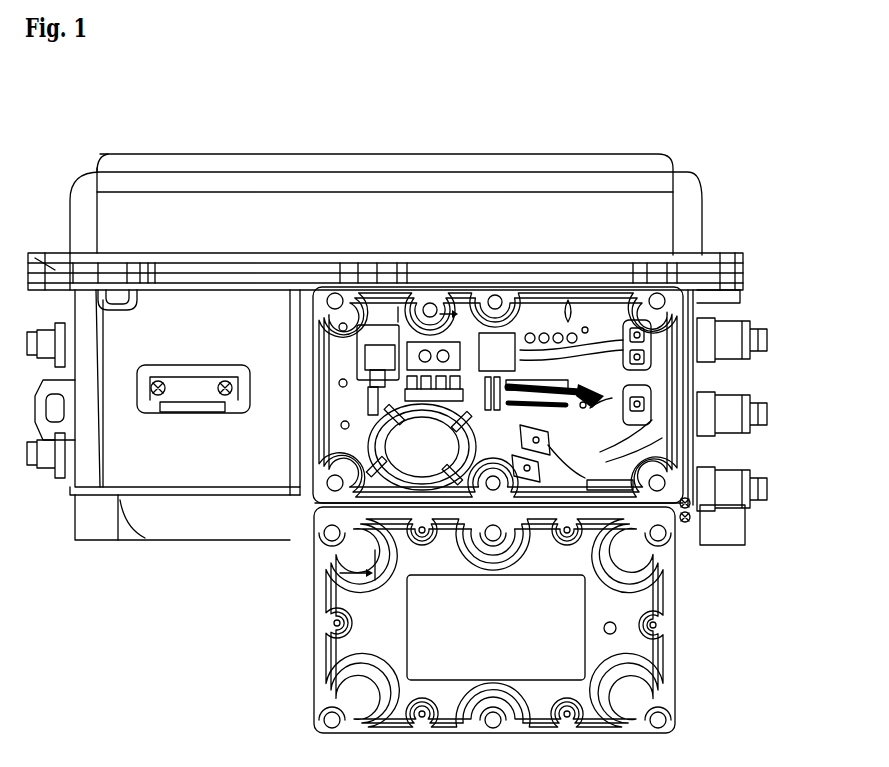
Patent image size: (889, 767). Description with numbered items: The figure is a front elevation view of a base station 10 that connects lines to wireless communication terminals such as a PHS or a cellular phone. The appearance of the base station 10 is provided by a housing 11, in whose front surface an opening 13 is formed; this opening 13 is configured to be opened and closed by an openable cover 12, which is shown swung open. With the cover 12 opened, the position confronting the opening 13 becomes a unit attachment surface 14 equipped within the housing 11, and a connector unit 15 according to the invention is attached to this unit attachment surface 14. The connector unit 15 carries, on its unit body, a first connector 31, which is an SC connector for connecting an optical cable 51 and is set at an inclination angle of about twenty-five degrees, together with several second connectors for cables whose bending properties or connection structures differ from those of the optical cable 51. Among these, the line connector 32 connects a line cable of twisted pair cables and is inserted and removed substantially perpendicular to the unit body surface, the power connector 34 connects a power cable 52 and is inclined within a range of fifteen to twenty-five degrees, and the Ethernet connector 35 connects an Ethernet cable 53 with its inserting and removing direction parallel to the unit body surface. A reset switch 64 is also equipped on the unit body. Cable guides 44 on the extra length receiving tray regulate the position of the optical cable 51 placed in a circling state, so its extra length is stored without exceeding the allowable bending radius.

The base station 10 is at (435, 443).
The housing 11 is at (712, 198).
The openable cover 12 is at (682, 667).
The opening 13 is at (572, 318).
The unit attachment surface 14 is at (608, 452).
The connector unit 15 is at (457, 347).
The first connector 31 is at (363, 357).
The line connector 32 is at (475, 380).
The power connector 34 is at (600, 392).
The Ethernet connector 35 is at (526, 330).
The cable guides 44 is at (428, 490).
The optical cable 51 is at (578, 462).
The power cable 52 is at (652, 396).
The Ethernet cable 53 is at (658, 303).
The reset switch 64 is at (422, 342).